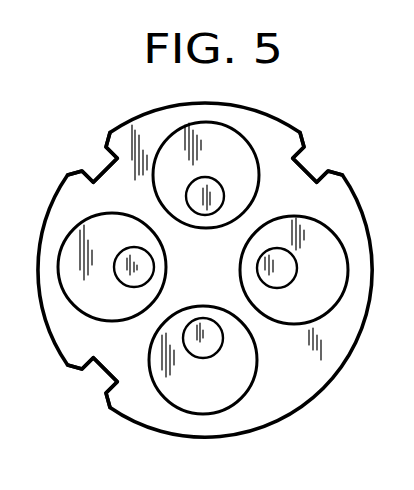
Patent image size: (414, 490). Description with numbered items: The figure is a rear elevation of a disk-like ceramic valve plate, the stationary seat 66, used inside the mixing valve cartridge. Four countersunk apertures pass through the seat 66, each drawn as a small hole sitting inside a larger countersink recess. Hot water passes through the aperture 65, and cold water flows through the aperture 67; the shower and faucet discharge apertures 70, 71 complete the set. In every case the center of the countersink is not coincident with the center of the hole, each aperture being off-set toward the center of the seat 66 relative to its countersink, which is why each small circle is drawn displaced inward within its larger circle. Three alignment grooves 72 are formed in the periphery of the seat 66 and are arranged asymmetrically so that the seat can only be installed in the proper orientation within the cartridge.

The hot water aperture 65 is at (287, 258).
The stationary seat 66 is at (290, 140).
The cold water aperture 67 is at (130, 251).
The shower discharge aperture 70 is at (214, 185).
The faucet discharge aperture 71 is at (209, 353).
The alignment grooves 72 is at (87, 167).